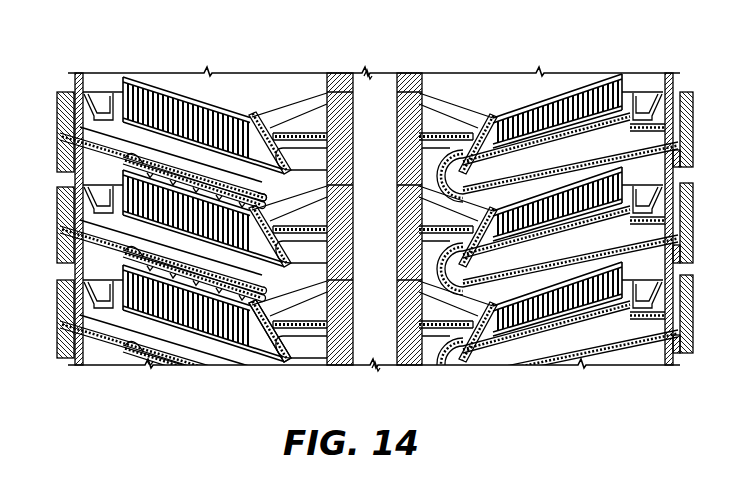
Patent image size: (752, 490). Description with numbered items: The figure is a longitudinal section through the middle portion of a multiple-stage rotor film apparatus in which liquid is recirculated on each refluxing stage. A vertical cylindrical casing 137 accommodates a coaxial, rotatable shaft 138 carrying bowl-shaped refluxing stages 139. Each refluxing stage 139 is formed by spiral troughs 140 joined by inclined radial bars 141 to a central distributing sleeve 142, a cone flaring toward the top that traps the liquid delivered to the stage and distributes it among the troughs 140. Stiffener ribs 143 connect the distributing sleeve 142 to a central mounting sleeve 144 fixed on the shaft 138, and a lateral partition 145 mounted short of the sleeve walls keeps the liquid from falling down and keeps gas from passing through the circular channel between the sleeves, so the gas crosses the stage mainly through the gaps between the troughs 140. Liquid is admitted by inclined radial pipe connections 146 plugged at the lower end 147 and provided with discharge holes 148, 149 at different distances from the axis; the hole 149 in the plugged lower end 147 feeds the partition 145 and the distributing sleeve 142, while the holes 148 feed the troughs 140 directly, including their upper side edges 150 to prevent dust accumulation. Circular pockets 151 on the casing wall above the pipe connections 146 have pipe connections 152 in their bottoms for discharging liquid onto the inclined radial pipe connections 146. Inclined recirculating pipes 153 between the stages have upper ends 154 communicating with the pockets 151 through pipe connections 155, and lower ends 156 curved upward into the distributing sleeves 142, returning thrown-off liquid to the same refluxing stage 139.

The vertical cylindrical casing 137 is at (78, 73).
The shaft 138 is at (366, 72).
The refluxing stage 139 is at (168, 84).
The spiral trough 140 is at (634, 178).
The inclined radial bar 141 is at (120, 260).
The central distributing sleeve 142 is at (494, 116).
The stiffener rib 143 is at (430, 108).
The central mounting sleeve 144 is at (328, 94).
The lateral partition 145 is at (278, 130).
The inclined radial pipe connection 146 is at (77, 125).
The plugged lower end 147 is at (252, 113).
The discharge hole 148 is at (72, 172).
The discharge hole 149 is at (267, 190).
The upper side edge 150 is at (248, 305).
The circular pocket 151 is at (105, 98).
The pipe connection 152 is at (100, 292).
The inclined recirculating pipe 153 is at (618, 340).
The upper end 154 is at (667, 322).
The pipe connection 155 is at (648, 102).
The lower end 156 is at (463, 152).